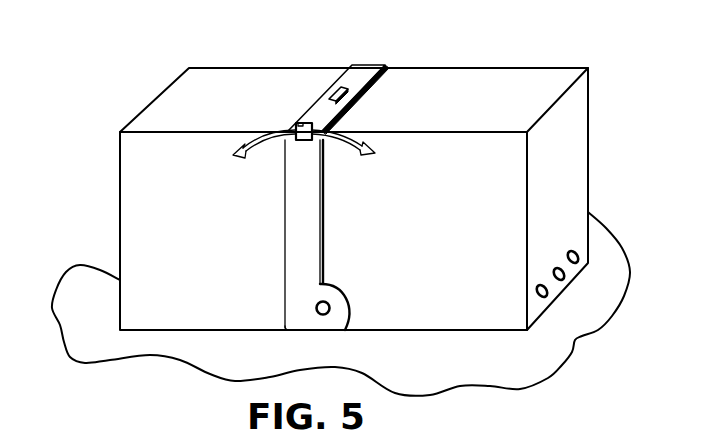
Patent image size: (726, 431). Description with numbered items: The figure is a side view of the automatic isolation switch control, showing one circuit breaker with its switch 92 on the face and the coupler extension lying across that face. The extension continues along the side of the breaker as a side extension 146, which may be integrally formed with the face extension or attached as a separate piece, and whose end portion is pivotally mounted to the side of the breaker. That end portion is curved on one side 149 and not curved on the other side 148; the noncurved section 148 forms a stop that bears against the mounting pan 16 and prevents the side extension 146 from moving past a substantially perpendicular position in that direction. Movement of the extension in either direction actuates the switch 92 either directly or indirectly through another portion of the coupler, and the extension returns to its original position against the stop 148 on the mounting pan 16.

The mounting pan 16 is at (618, 283).
The switch 92 is at (340, 95).
The side extension 146 is at (303, 254).
The noncurved section 148 is at (284, 332).
The curved side 149 is at (347, 332).